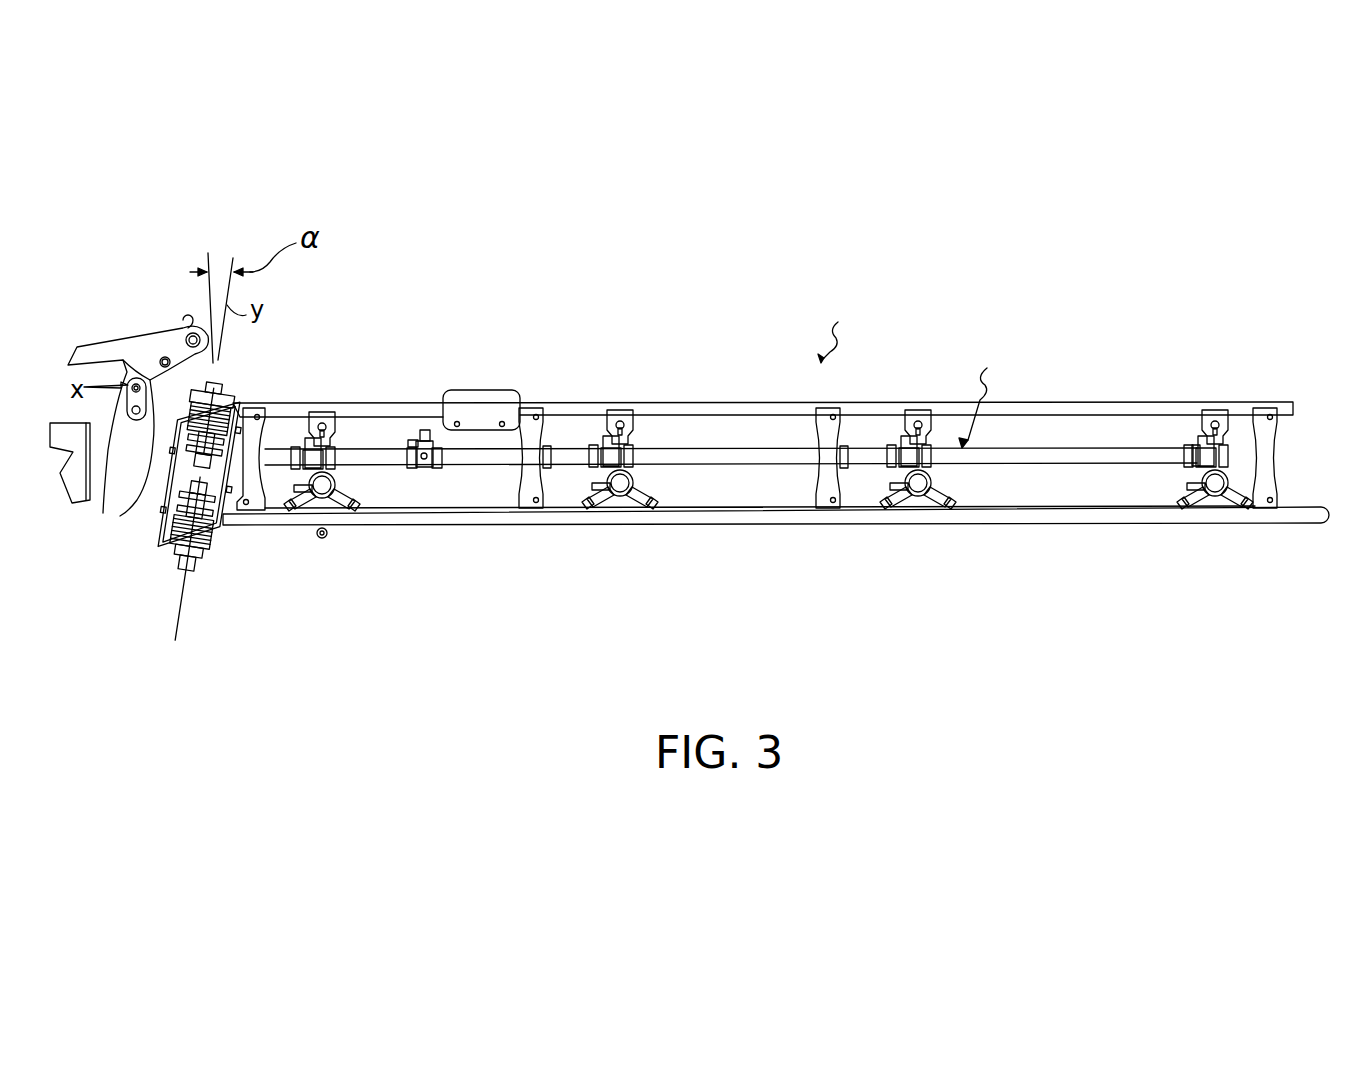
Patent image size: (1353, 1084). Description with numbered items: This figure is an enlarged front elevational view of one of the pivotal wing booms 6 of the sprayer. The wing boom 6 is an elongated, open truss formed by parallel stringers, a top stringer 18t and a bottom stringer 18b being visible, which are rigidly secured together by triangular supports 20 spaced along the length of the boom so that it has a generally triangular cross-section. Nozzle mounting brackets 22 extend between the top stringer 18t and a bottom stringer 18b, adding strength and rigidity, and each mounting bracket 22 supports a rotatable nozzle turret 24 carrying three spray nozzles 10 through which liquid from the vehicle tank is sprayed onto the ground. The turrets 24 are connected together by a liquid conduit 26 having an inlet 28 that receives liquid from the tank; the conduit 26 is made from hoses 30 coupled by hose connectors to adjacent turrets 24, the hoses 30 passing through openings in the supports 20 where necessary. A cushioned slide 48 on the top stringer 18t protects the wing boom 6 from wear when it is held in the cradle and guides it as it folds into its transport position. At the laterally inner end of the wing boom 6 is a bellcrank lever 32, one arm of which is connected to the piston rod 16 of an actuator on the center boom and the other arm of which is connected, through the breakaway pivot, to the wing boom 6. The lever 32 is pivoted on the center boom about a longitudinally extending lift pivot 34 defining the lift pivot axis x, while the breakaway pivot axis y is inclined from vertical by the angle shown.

The wing boom 6 is at (832, 329).
The spray nozzle 10 is at (292, 478).
The piston rod 16 is at (125, 348).
The top stringer 18t is at (662, 402).
The bottom stringer 18b is at (722, 525).
The triangular support 20 is at (522, 438).
The nozzle mounting bracket 22 is at (320, 418).
The nozzle turret 24 is at (322, 485).
The liquid conduit 26 is at (978, 393).
The inlet 28 is at (423, 430).
The hose 30 is at (373, 452).
The bellcrank lever 32 is at (155, 478).
The lift pivot 34 is at (130, 398).
The cushioned slide 48 is at (487, 390).